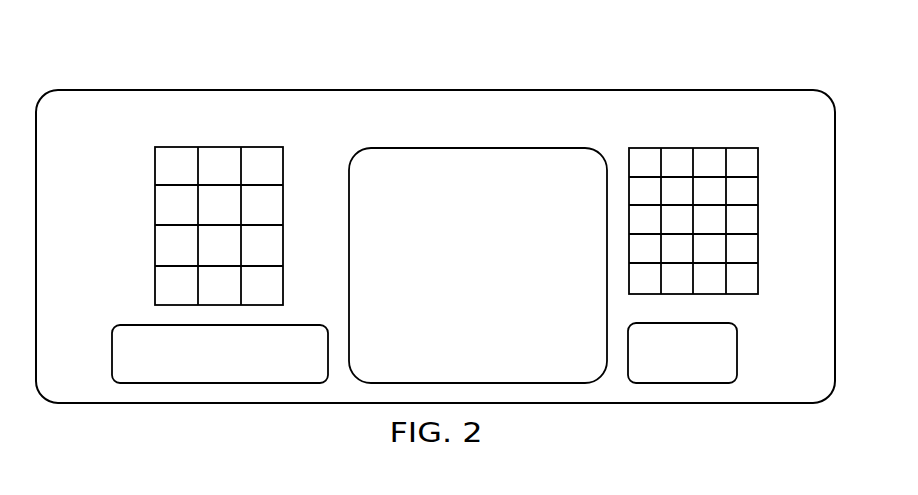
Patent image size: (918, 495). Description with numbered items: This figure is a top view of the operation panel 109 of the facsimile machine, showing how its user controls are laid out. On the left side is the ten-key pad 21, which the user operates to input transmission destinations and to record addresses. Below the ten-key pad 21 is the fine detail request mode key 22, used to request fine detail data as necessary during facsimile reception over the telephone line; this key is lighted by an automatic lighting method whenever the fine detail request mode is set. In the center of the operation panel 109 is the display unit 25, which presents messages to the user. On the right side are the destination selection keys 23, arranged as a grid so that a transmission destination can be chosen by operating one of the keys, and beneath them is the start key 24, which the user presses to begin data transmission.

The operation panel 109 is at (314, 85).
The ten-key pad 21 is at (155, 238).
The fine detail request mode key 22 is at (112, 353).
The destination selection keys 23 is at (758, 222).
The start key 24 is at (737, 355).
The display unit 25 is at (478, 147).